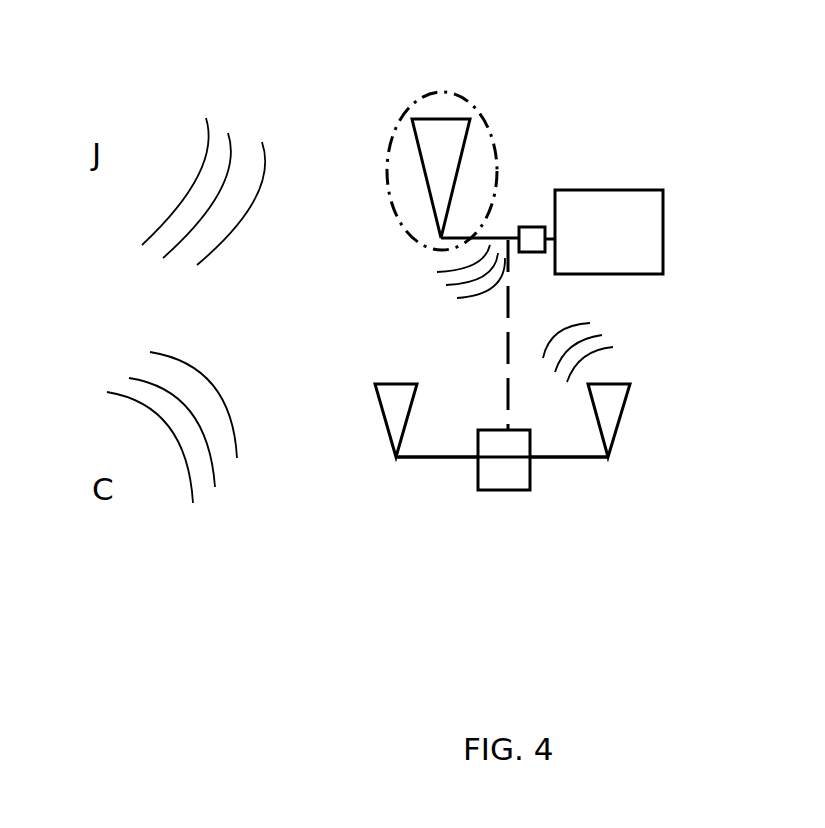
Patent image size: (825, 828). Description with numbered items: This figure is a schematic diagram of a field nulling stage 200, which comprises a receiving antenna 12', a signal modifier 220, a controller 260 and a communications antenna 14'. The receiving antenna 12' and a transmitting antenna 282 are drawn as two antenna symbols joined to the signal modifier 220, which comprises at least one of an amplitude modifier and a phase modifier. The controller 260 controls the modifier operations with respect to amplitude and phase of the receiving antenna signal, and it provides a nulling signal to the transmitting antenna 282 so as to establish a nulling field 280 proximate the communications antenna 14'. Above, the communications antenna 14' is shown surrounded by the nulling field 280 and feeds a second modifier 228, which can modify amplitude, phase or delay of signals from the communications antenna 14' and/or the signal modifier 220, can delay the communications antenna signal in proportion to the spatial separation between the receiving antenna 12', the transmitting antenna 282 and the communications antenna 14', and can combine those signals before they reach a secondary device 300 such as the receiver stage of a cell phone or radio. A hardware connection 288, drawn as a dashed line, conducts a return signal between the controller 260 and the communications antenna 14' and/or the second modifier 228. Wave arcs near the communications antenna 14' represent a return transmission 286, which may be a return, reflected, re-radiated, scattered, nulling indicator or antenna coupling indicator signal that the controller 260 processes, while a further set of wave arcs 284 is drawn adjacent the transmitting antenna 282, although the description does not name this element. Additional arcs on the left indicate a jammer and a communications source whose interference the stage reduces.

The communications antenna 14' is at (378, 143).
The nulling field 280 is at (448, 90).
The second modifier 228 is at (521, 227).
The secondary device 300 is at (627, 175).
The hardware connection 288 is at (512, 296).
The return transmission 286 is at (435, 277).
The received signal 284 is at (618, 332).
The transmitting antenna 282 is at (614, 392).
The receiving antenna 12' is at (399, 463).
The signal modifier 220 is at (500, 477).
The controller 260 is at (508, 442).
The field nulling stage 200 is at (402, 593).